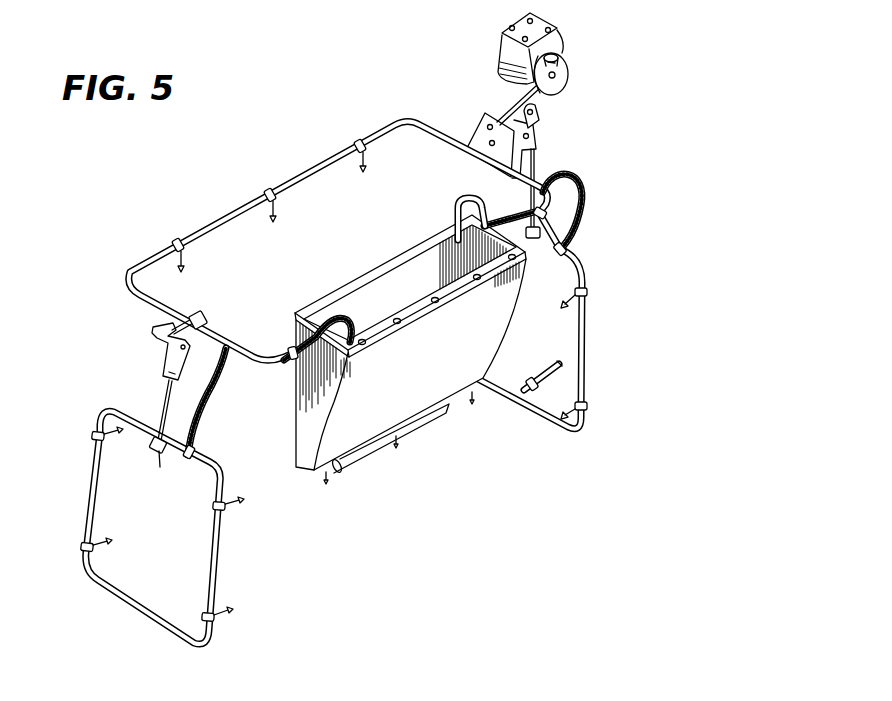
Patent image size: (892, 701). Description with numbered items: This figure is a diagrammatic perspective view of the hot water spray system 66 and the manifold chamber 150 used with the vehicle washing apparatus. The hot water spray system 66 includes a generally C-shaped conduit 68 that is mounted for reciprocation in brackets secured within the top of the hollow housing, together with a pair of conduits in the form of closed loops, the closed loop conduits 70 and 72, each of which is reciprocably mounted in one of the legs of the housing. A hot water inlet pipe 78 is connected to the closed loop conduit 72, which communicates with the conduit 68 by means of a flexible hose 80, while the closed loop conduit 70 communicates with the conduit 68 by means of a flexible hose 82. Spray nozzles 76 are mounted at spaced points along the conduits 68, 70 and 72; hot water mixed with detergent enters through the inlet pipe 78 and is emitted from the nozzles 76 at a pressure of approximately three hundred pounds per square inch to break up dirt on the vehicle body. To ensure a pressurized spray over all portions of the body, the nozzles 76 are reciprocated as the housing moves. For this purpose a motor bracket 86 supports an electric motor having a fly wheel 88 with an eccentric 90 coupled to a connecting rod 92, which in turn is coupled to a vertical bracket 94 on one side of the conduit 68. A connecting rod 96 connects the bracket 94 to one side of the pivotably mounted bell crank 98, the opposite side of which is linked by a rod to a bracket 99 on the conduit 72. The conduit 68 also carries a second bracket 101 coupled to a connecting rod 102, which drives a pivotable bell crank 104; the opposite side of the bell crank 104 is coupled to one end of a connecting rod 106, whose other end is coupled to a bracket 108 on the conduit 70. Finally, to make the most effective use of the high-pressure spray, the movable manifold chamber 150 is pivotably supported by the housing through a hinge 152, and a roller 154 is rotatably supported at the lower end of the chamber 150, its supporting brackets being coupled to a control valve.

The hot water spray system 66 is at (338, 222).
The C-shaped conduit 68 is at (218, 222).
The closed loop conduit 70 is at (217, 563).
The closed loop conduit 72 is at (586, 335).
The spray nozzles 76 is at (362, 160).
The hot water inlet pipe 78 is at (545, 374).
The flexible hose 80 is at (582, 203).
The flexible hose 82 is at (217, 410).
The motor bracket 86 is at (535, 25).
The fly wheel 88 is at (568, 84).
The eccentric 90 is at (563, 61).
The connecting rod 92 is at (510, 96).
The vertical bracket 94 is at (484, 140).
The connecting rod 96 is at (539, 131).
The bell crank 98 is at (540, 116).
The bracket 99 is at (547, 242).
The second bracket 101 is at (205, 322).
The connecting rod 102 is at (190, 318).
The bell crank 104 is at (153, 337).
The connecting rod 106 is at (161, 395).
The bracket 108 is at (159, 458).
The manifold chamber 150 is at (410, 342).
The hinge 152 is at (467, 290).
The roller 154 is at (372, 450).